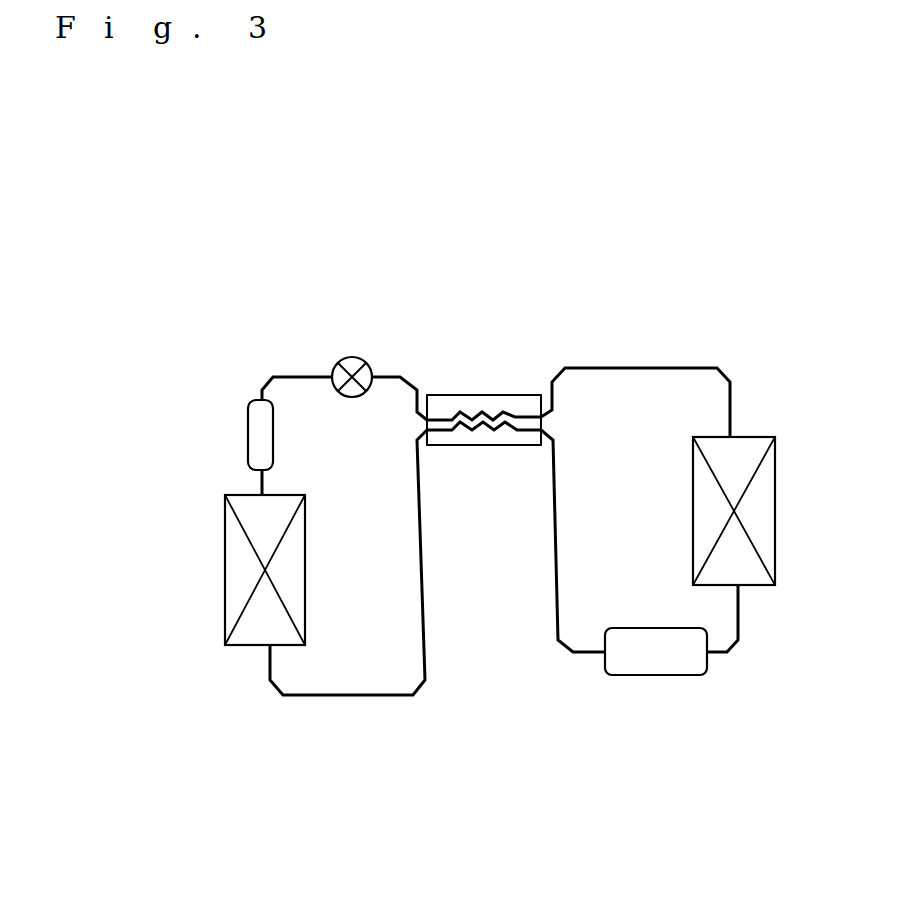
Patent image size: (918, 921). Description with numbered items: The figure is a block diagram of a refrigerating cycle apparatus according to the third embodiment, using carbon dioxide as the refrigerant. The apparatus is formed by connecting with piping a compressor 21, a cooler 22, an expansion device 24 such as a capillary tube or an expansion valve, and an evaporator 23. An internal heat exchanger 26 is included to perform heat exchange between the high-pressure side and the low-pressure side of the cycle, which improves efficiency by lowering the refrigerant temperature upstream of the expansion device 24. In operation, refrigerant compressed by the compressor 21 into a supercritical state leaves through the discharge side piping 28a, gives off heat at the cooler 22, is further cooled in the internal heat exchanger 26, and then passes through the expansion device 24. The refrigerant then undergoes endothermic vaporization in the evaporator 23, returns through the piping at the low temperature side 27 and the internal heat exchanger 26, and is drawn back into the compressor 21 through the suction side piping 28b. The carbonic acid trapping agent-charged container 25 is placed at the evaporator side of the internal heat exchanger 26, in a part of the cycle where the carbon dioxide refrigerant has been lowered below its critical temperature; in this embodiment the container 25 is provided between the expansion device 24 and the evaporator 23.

The compressor 21 is at (657, 675).
The cooler 22 is at (757, 435).
The evaporator 23 is at (242, 645).
The expansion device 24 is at (345, 355).
The carbonic acid trapping agent-charged container 25 is at (250, 398).
The internal heat exchanger 26 is at (495, 393).
The piping at a low temperature side 27 is at (348, 695).
The discharge side piping of a compressor 28a is at (727, 652).
The suction side piping of a compressor 28b is at (573, 652).